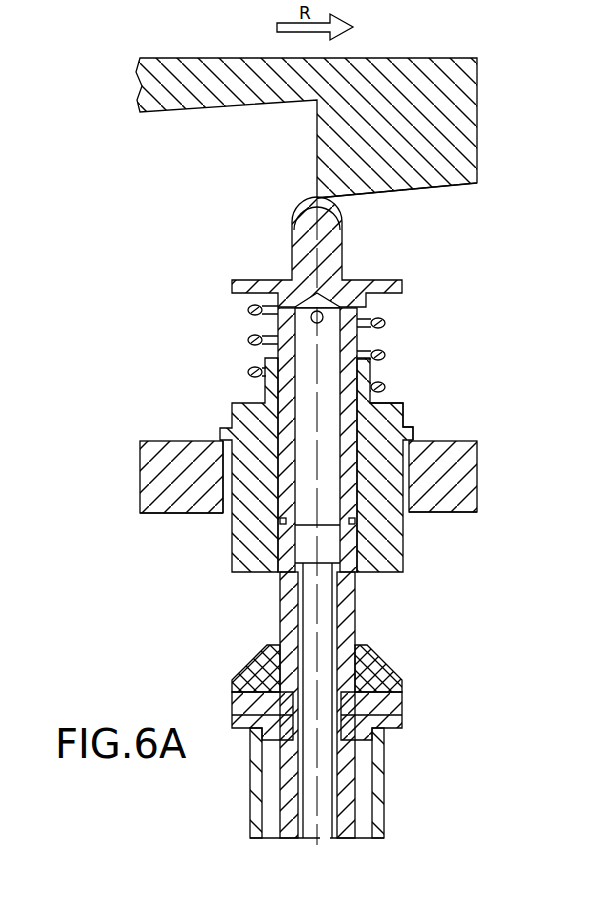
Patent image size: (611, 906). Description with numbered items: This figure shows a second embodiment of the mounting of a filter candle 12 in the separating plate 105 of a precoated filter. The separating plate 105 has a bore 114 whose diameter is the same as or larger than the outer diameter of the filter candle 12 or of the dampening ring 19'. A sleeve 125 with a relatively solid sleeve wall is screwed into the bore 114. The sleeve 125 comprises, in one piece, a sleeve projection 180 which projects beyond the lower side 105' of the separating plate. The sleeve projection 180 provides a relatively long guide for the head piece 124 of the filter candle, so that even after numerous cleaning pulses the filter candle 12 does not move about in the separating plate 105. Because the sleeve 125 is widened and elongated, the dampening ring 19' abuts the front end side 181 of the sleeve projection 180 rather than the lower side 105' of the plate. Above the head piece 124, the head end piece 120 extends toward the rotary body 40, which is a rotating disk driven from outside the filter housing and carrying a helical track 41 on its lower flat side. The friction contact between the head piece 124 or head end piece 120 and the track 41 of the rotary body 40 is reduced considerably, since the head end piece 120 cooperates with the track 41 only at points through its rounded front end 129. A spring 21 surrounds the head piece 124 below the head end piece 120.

The disk 40 is at (447, 127).
The helical track 41 is at (445, 188).
The front end 129 is at (312, 197).
The head end piece 120 is at (332, 242).
The spring 21 is at (380, 348).
The head piece 124 is at (265, 402).
The sleeve 125 is at (406, 417).
The separating plate 105 is at (340, 477).
The lower side of the separating plate 105' is at (447, 535).
The bore 114 is at (213, 487).
The sleeve projection 180 is at (387, 525).
The front end side 181 is at (352, 567).
The dampening ring 19' is at (352, 668).
The filter candle 12 is at (385, 755).